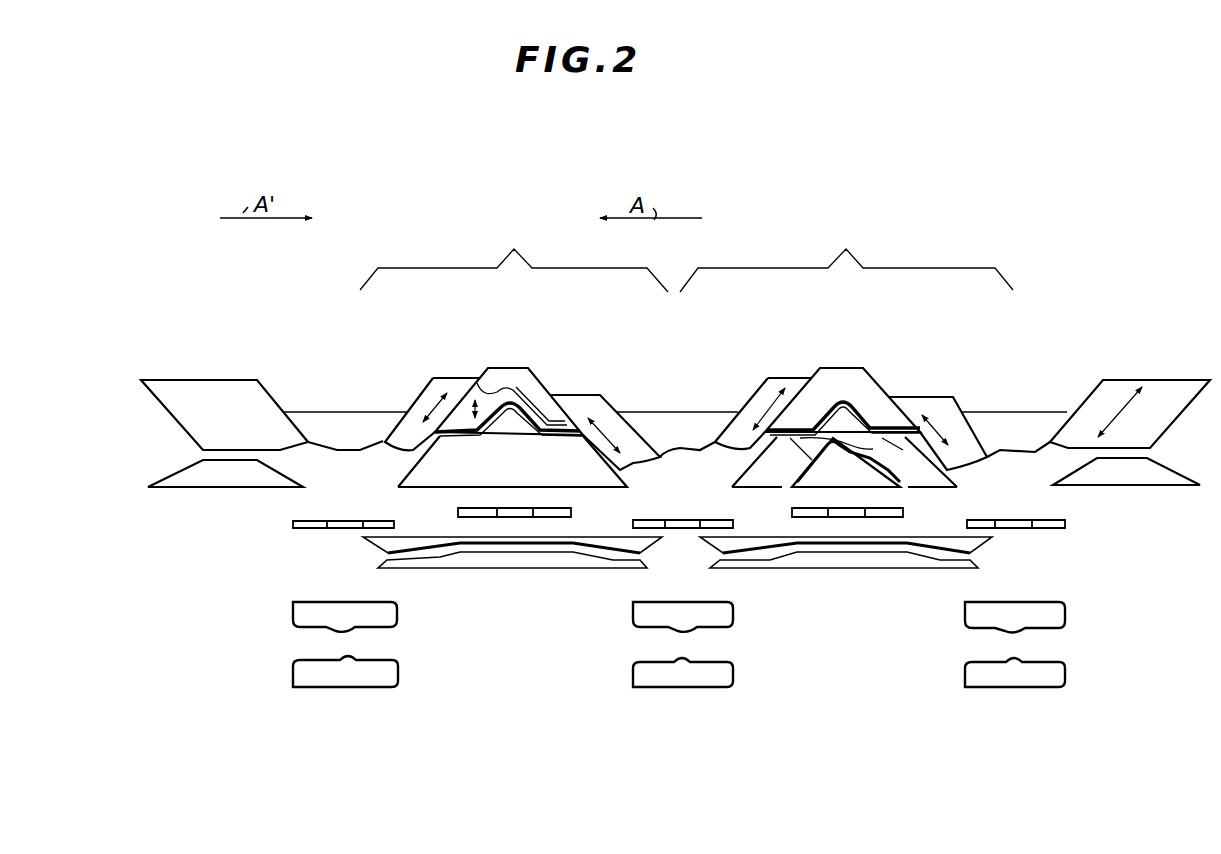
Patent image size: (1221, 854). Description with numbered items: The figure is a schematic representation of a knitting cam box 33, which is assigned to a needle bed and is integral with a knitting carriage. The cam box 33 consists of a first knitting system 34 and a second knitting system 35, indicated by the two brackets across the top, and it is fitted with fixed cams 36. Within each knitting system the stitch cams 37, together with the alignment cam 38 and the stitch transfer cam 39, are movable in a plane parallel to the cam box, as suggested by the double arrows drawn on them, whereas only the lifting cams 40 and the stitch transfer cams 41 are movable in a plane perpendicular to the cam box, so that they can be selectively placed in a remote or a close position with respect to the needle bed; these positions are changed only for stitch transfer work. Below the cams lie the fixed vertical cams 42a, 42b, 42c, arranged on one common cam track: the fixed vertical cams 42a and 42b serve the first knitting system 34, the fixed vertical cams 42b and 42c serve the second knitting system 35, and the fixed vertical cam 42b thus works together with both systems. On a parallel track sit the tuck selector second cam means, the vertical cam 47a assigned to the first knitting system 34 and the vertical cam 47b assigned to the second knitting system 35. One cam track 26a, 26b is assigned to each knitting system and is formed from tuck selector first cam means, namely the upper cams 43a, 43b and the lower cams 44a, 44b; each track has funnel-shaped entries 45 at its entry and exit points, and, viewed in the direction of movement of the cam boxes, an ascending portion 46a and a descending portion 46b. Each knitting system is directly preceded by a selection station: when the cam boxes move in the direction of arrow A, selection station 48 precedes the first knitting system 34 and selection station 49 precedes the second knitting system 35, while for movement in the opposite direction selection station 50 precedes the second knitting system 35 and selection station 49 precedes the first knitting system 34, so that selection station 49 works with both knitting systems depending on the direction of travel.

The cam track 26a is at (368, 558).
The cam track 26b is at (997, 555).
The cam box 33 is at (107, 303).
The first knitting system 34 is at (514, 259).
The second knitting system 35 is at (846, 259).
The fixed cams 36 is at (238, 395).
The stitch cams 37 is at (422, 403).
The alignment cam 38 is at (1112, 392).
The stitch transfer cam 39 is at (462, 405).
The lifting cams 40 is at (913, 447).
The stitch transfer cams 41 is at (820, 480).
The fixed vertical cam 42a is at (335, 517).
The fixed vertical cam 42b is at (685, 520).
The fixed vertical cam 42c is at (1017, 515).
The upper cam 43a is at (598, 543).
The upper cam 43b is at (932, 540).
The lower cam 44a is at (483, 563).
The lower cam 44b is at (823, 563).
The funnel-shaped entries 45 is at (377, 562).
The ascending portion 46a is at (443, 557).
The descending portion 46b is at (603, 555).
The vertical cam 47a is at (507, 507).
The vertical cam 47b is at (830, 506).
The selection station 48 is at (320, 672).
The selection station 49 is at (652, 668).
The selection station 50 is at (1040, 667).